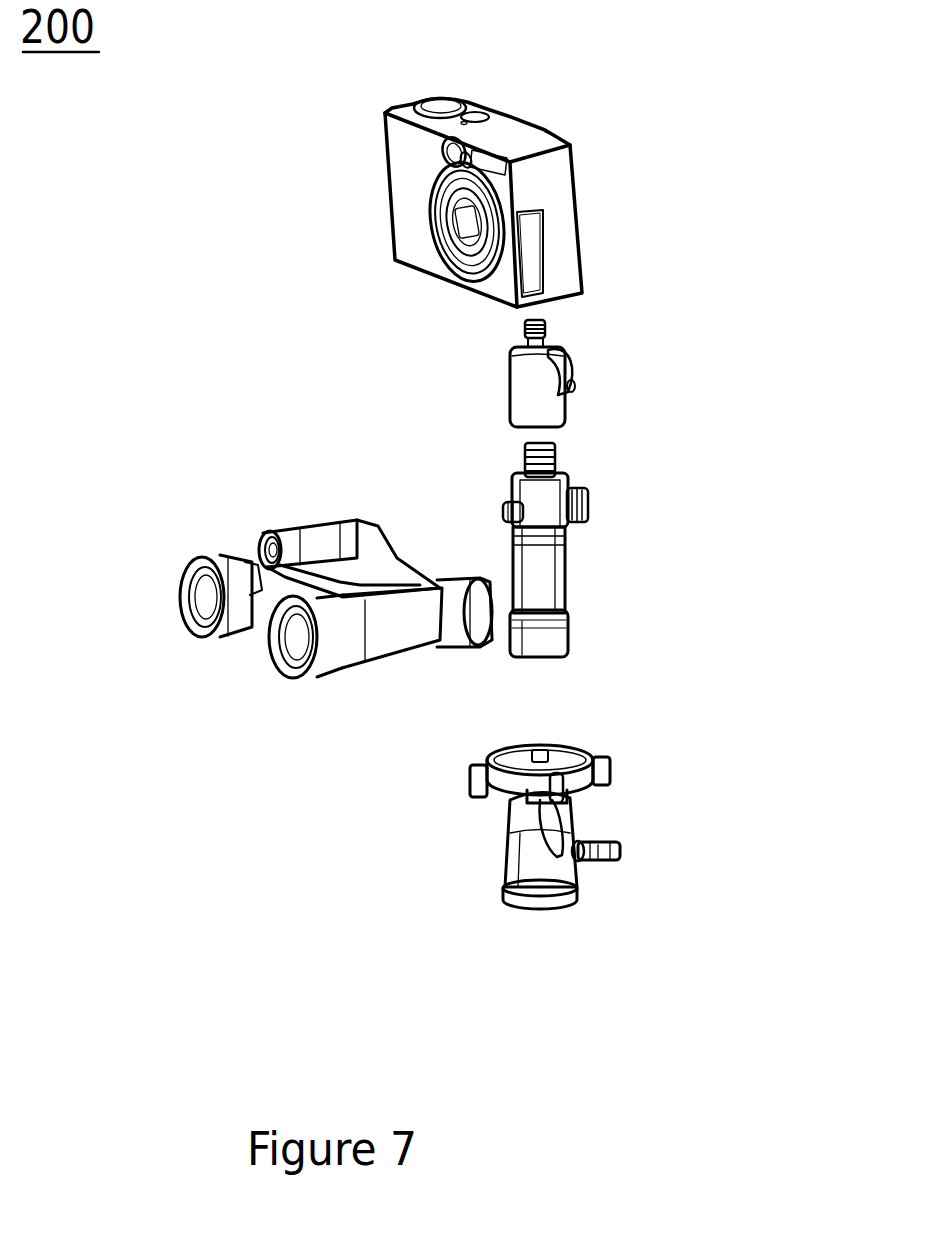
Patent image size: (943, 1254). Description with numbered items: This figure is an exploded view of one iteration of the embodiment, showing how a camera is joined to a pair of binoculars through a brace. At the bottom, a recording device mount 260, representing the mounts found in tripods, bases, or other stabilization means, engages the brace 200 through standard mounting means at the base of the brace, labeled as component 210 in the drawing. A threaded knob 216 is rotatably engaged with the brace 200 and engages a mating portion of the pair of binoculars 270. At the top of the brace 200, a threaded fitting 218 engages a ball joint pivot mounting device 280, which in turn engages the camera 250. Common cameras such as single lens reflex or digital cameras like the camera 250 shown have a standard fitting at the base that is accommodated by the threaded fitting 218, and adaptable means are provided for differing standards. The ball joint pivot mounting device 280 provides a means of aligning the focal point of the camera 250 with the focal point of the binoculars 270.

The brace 200 is at (674, 465).
The base clamp block 210 is at (553, 645).
The threaded knob 216 is at (653, 443).
The threaded fitting 218 is at (553, 452).
The camera 250 is at (618, 205).
The recording device mount 260 is at (626, 792).
The pair of binoculars 270 is at (199, 657).
The ball joint pivot mounting device 280 is at (474, 387).